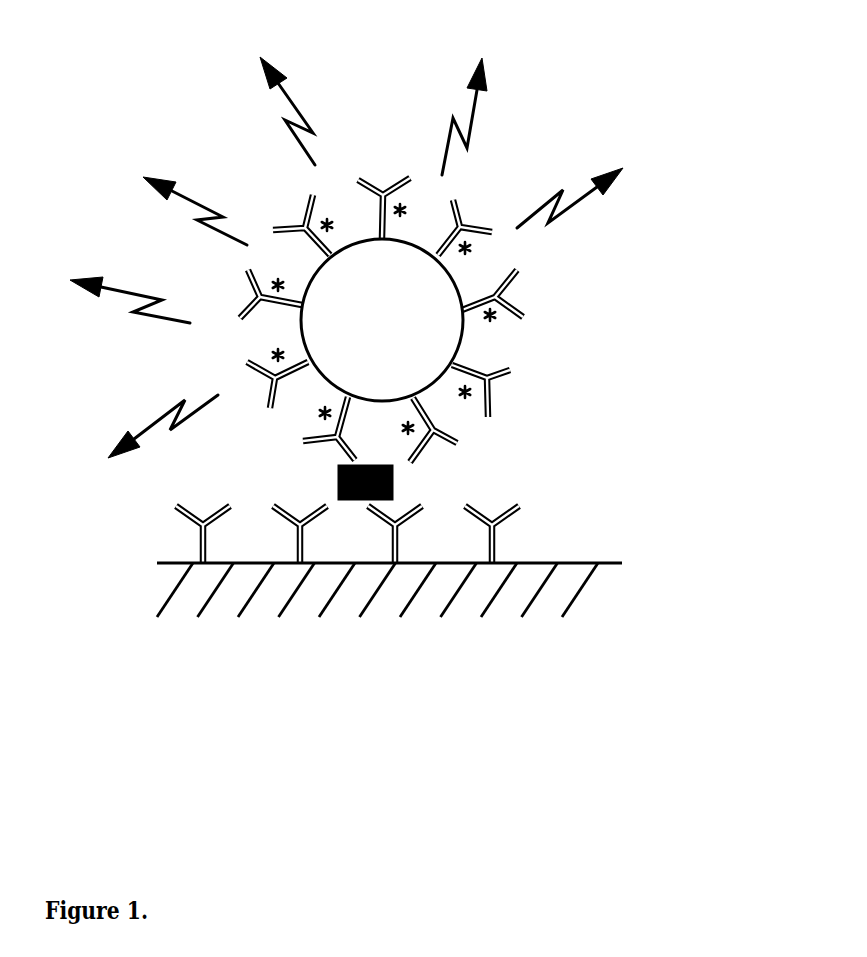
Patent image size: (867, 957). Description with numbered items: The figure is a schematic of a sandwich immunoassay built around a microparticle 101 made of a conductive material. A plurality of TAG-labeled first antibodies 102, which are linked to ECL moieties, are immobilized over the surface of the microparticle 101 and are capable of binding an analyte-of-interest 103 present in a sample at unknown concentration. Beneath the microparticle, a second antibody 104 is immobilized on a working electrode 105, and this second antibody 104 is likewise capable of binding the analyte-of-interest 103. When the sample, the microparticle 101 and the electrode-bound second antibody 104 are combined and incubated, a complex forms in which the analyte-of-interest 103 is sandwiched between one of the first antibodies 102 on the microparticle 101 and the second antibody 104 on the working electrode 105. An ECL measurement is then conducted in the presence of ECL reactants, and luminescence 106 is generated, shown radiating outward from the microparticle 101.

The microparticle 101 is at (428, 307).
The TAG-labeled antibody 102 is at (520, 365).
The analyte-of-interest 103 is at (393, 483).
The second antibody 104 is at (535, 528).
The working electrode 105 is at (618, 590).
The luminescence 106 is at (346, 238).